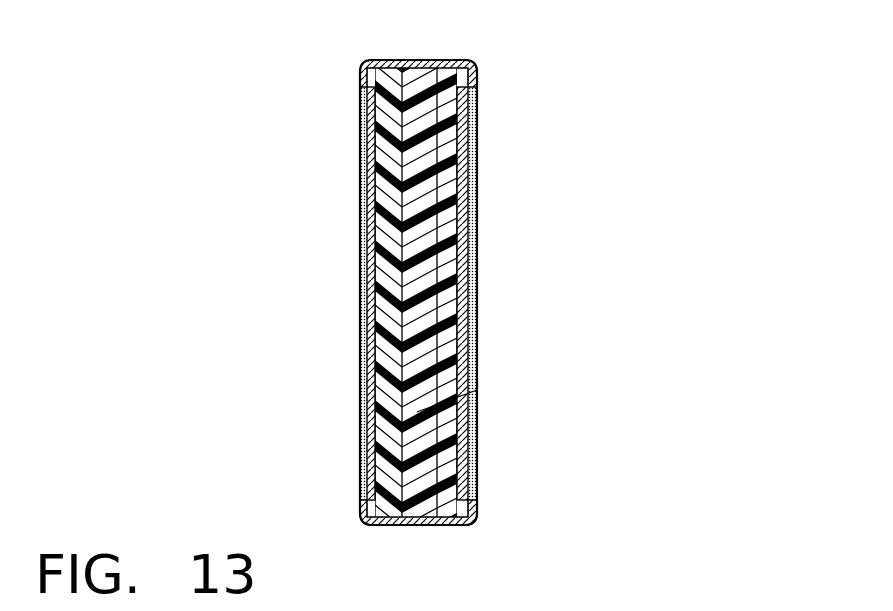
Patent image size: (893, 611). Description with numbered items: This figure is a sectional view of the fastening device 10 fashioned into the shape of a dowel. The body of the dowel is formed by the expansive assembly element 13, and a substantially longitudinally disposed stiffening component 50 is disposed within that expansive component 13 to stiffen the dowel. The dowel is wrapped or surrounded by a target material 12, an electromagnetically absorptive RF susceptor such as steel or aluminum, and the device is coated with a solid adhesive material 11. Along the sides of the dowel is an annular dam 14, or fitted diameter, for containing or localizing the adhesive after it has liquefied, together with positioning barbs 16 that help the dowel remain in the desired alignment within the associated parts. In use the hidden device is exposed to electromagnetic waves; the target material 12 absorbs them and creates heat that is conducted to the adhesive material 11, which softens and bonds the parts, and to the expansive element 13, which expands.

The fastening device 10 is at (455, 55).
The solid adhesive material 11 is at (475, 235).
The target material 12 is at (475, 72).
The expansive assembly element 13 is at (475, 270).
The annular dam 14 is at (475, 342).
The positioning barbs 16 is at (477, 368).
The stiffening component 50 is at (477, 390).